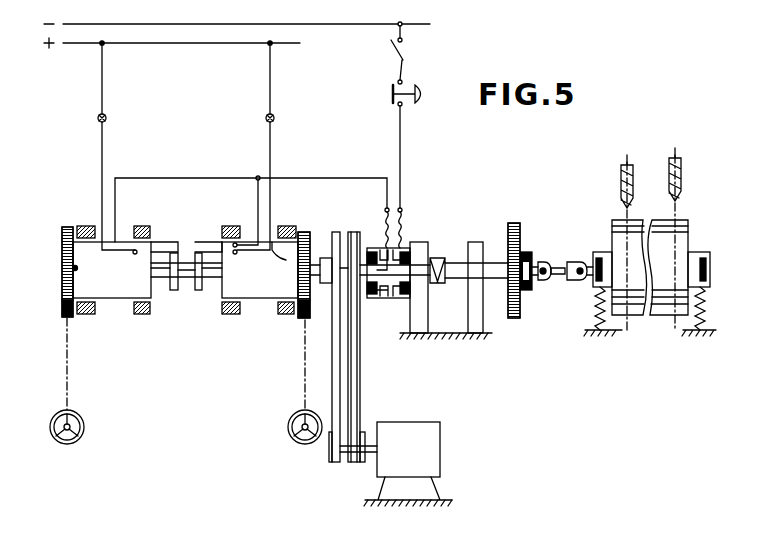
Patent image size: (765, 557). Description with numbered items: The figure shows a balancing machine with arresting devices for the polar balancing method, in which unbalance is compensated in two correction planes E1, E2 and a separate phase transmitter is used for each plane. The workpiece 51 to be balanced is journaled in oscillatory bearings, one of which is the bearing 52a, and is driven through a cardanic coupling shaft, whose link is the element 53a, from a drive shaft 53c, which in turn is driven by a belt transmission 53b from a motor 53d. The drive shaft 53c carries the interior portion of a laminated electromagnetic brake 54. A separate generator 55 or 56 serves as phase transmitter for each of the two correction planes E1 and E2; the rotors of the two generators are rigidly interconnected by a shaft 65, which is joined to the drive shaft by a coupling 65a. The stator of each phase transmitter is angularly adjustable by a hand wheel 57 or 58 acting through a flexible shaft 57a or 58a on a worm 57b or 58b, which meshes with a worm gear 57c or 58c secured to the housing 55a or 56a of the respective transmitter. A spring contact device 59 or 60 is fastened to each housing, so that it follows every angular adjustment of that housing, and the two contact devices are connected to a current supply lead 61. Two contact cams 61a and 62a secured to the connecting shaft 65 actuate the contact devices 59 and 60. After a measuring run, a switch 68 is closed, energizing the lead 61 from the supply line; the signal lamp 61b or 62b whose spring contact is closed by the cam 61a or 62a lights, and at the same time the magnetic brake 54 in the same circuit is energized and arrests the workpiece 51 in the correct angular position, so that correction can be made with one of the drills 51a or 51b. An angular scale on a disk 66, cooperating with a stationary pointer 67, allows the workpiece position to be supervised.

The workpiece 51 is at (650, 222).
The drill 51a is at (625, 163).
The drill 51b is at (685, 143).
The oscillatory bearing 52a is at (590, 287).
The connecting rod 53a is at (577, 240).
The belt transmission 53b is at (357, 376).
The drive shaft 53c is at (443, 270).
The motor 53d is at (400, 422).
The laminated electromagnetic brake 54 is at (395, 298).
The generator 55 is at (110, 298).
The housing 55a is at (62, 268).
The generator 56 is at (258, 298).
The housing 56a is at (283, 240).
The hand wheel 57 is at (55, 410).
The flexible shaft 57a is at (67, 365).
The worm 57b is at (68, 316).
The worm gear 57c is at (65, 224).
The hand wheel 58 is at (292, 412).
The flexible shaft 58a is at (305, 372).
The worm 58b is at (304, 320).
The worm gear 58c is at (308, 230).
The spring contact device 59 is at (172, 252).
The spring contact device 60 is at (200, 252).
The current supply lead 61 is at (203, 176).
The contact cam 61a is at (173, 291).
The signal lamp 61b is at (106, 117).
The contact cam 62a is at (198, 292).
The signal lamp 62b is at (266, 118).
The shaft 65 is at (182, 265).
The coupling 65a is at (331, 258).
The disk 66 is at (518, 223).
The stationary pointer 67 is at (496, 225).
The switch 68 is at (424, 92).
The correction plane E1 is at (627, 330).
The correction plane E2 is at (675, 328).